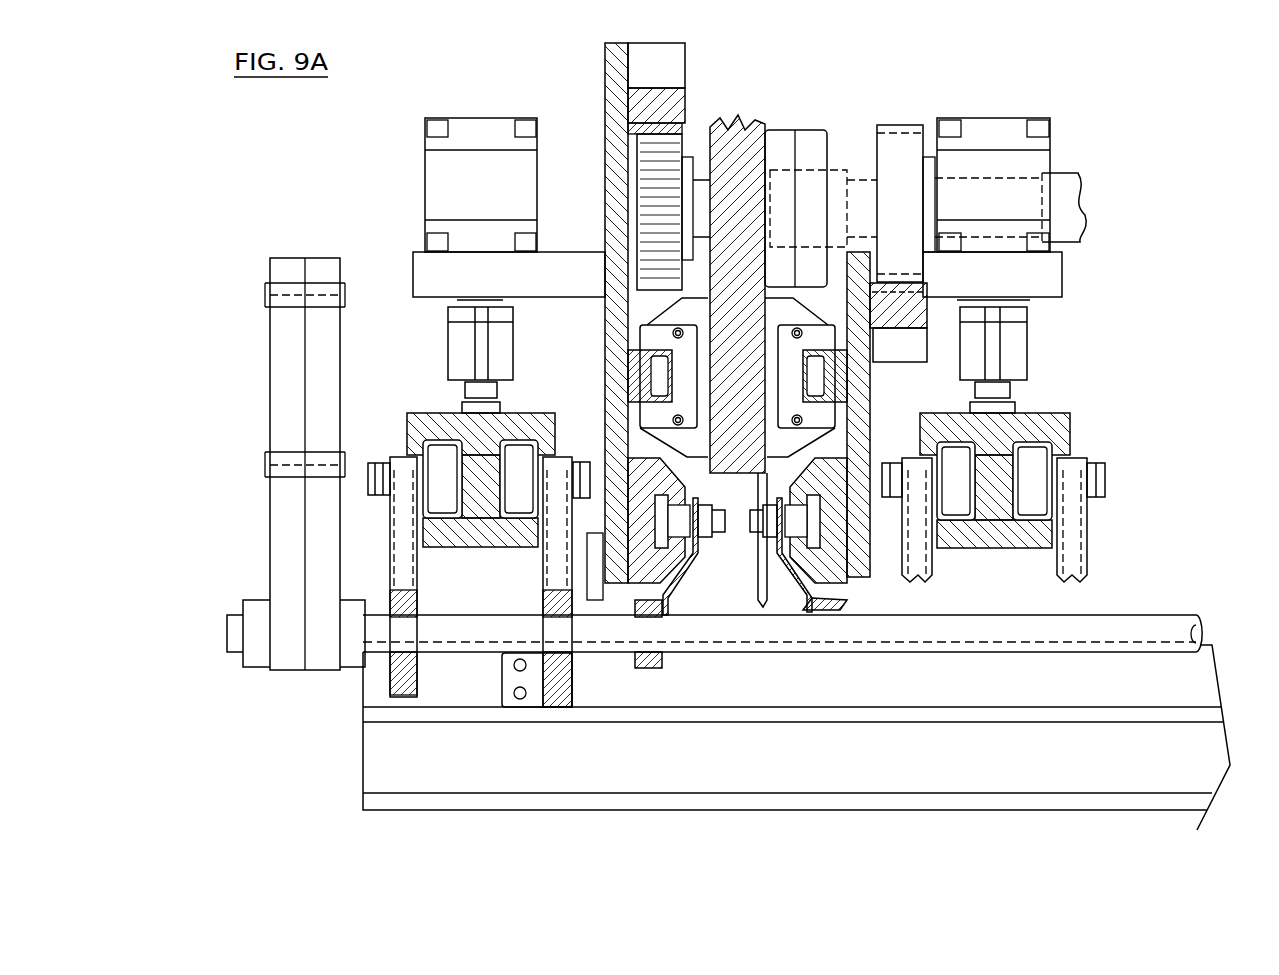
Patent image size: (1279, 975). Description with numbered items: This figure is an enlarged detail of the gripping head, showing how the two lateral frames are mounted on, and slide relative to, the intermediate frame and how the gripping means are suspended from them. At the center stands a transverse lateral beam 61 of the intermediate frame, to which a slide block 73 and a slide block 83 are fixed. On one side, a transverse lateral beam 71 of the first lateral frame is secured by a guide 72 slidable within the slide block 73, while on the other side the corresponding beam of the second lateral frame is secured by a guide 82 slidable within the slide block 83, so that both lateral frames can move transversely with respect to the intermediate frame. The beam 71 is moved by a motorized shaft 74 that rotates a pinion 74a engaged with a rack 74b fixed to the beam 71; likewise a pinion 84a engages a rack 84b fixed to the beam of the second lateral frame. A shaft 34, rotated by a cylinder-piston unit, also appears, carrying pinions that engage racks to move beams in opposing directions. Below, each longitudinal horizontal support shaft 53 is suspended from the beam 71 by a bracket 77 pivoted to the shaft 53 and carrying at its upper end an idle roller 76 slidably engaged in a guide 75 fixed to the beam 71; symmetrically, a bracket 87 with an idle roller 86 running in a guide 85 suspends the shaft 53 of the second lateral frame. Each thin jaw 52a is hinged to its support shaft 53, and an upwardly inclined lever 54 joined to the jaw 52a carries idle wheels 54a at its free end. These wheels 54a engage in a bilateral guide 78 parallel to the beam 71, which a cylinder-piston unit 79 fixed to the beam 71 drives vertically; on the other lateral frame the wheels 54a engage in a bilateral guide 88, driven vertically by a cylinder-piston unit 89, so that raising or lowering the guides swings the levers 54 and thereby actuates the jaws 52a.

The shaft 34 is at (1063, 182).
The jaw 52a is at (373, 763).
The support shaft 53 is at (1152, 633).
The lever 54 is at (302, 548).
The idle wheel 54a is at (445, 452).
The transverse lateral beam 61 is at (268, 356).
The transverse lateral beam 71 is at (605, 73).
The guide 72 is at (607, 262).
The slide block 73 is at (663, 507).
The motorized shaft 74 is at (862, 207).
The pinion 74a is at (690, 130).
The rack 74b is at (643, 87).
The guide 75 is at (687, 550).
The idle roller 76 is at (670, 447).
The bracket 77 is at (680, 580).
The bilateral guide 78 is at (457, 427).
The cylinder-piston unit 79 is at (423, 167).
The guide 82 is at (820, 327).
The slide block 83 is at (873, 455).
The pinion 84a is at (893, 127).
The rack 84b is at (985, 342).
The guide 85 is at (827, 567).
The idle roller 86 is at (847, 553).
The bracket 87 is at (773, 567).
The bilateral guide 88 is at (1058, 432).
The cylinder-piston unit 89 is at (1000, 137).